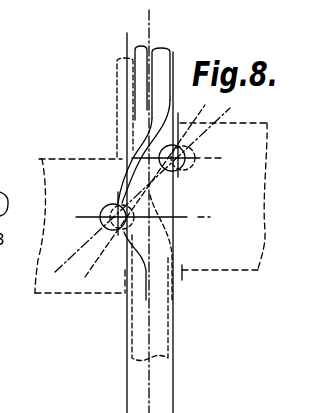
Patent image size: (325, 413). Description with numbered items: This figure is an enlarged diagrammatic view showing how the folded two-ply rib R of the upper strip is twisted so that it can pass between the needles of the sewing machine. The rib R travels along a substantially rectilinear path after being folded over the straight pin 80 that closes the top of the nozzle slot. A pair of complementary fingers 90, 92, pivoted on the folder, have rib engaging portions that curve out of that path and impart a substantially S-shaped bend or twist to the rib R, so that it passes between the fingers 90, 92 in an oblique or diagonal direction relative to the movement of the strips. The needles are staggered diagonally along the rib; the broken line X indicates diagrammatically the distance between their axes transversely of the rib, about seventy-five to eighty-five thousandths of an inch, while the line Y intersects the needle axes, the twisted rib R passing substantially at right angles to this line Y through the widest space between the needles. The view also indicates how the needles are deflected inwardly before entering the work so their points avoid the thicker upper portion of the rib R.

The straight pin or rod 80 is at (141, 51).
The finger 90 is at (70, 294).
The finger 92 is at (255, 235).
The broken line X is at (158, 219).
The line intersecting the axes of the needles Y is at (213, 130).
The two-ply rib R is at (162, 330).